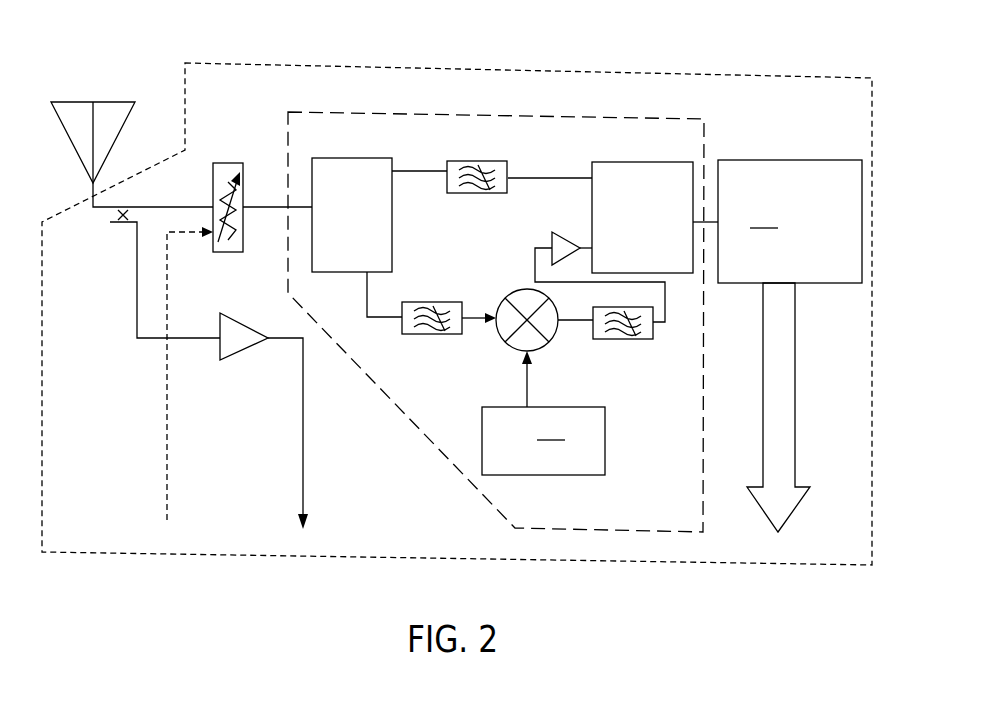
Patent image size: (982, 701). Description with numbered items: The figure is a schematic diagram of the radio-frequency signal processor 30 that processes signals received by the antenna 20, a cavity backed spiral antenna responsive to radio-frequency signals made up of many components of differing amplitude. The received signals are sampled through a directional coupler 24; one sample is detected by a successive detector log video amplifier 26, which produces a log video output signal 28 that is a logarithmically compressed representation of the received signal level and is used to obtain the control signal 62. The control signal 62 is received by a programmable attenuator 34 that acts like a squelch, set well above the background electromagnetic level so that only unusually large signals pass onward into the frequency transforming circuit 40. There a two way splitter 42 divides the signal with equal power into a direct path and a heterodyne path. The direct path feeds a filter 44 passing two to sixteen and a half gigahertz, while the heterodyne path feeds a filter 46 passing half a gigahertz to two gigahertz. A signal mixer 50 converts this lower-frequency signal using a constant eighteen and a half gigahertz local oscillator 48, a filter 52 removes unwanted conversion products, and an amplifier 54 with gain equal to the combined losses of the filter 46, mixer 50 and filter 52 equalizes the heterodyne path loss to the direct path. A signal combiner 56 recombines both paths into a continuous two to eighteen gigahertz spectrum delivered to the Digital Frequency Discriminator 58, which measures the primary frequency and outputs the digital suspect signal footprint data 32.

The antenna 20 is at (80, 102).
The directional coupler 24 is at (106, 212).
The successive detector log video amplifier 26 is at (248, 350).
The log video output signal 28 is at (303, 400).
The radio-frequency signal processor 30 is at (343, 60).
The suspect signal footprint data 32 is at (795, 442).
The programmable attenuator 34 is at (246, 177).
The frequency transforming circuit 40 is at (396, 416).
The two way splitter 42 is at (392, 190).
The filter 44 is at (503, 162).
The filter 46 is at (435, 302).
The local oscillator 48 is at (543, 413).
The signal mixer 50 is at (521, 289).
The filter 52 is at (615, 340).
The amplifier 54 is at (573, 237).
The signal combiner 56 is at (676, 162).
The Digital Frequency Discriminator 58 is at (790, 221).
The control signal 62 is at (167, 405).